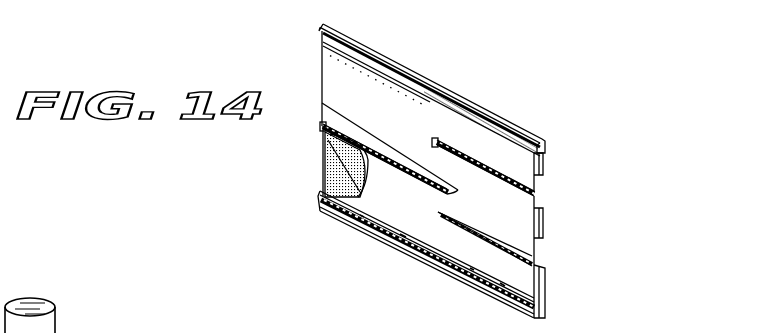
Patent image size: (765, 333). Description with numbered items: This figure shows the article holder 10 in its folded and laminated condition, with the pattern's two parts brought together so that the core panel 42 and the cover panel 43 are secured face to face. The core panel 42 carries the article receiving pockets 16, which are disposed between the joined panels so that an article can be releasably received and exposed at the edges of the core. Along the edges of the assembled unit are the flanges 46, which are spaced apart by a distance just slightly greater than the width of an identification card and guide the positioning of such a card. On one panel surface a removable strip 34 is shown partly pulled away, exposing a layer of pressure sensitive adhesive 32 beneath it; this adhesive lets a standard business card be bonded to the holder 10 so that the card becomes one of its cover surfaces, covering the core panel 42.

The article holder 10 is at (518, 72).
The pocket 16 is at (428, 139).
The pressure sensitive adhesive 32 is at (330, 174).
The removable strip 34 is at (321, 198).
The core panel 42 is at (517, 218).
The cover panel 43 is at (547, 153).
The flange 46 is at (386, 58).